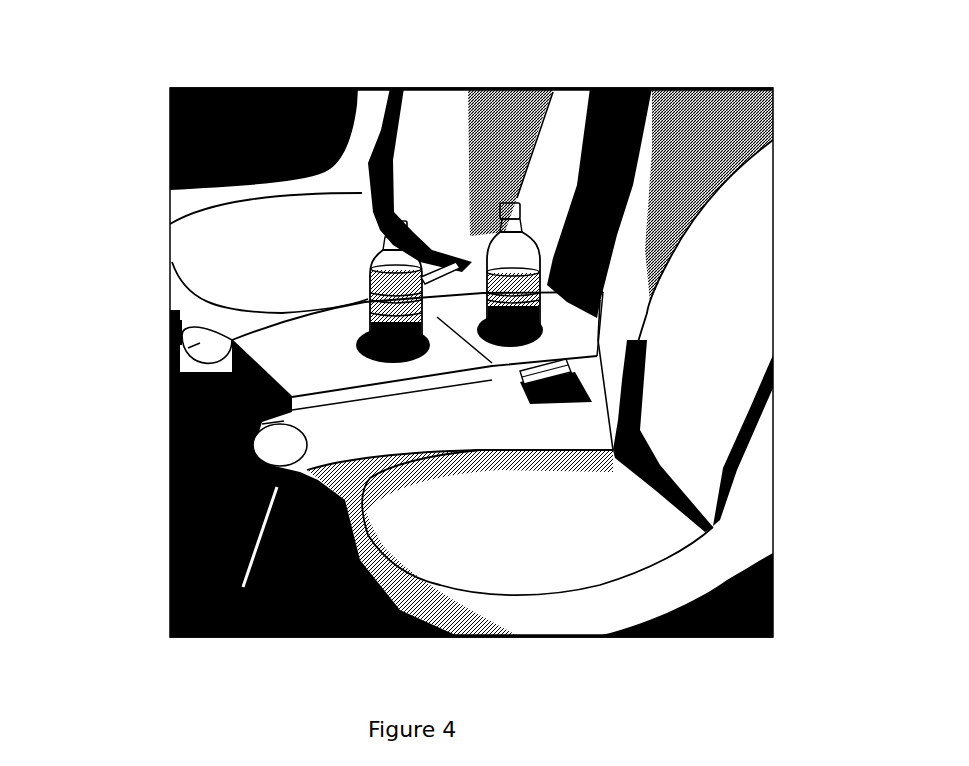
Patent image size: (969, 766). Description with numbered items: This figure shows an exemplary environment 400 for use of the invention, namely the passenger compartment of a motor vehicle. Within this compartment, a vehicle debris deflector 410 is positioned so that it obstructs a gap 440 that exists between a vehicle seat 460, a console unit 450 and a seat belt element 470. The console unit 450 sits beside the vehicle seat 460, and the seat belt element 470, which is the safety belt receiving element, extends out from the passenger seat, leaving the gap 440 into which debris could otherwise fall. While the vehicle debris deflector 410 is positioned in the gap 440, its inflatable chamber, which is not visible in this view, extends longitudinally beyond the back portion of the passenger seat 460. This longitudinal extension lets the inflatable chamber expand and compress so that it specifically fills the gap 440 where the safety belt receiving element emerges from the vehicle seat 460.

The exemplary environment 400 is at (463, 327).
The vehicle debris deflector 410 is at (172, 420).
The gap 440 is at (170, 447).
The console unit 450 is at (563, 331).
The vehicle seat 460 is at (433, 162).
The seat belt element 470 is at (545, 392).